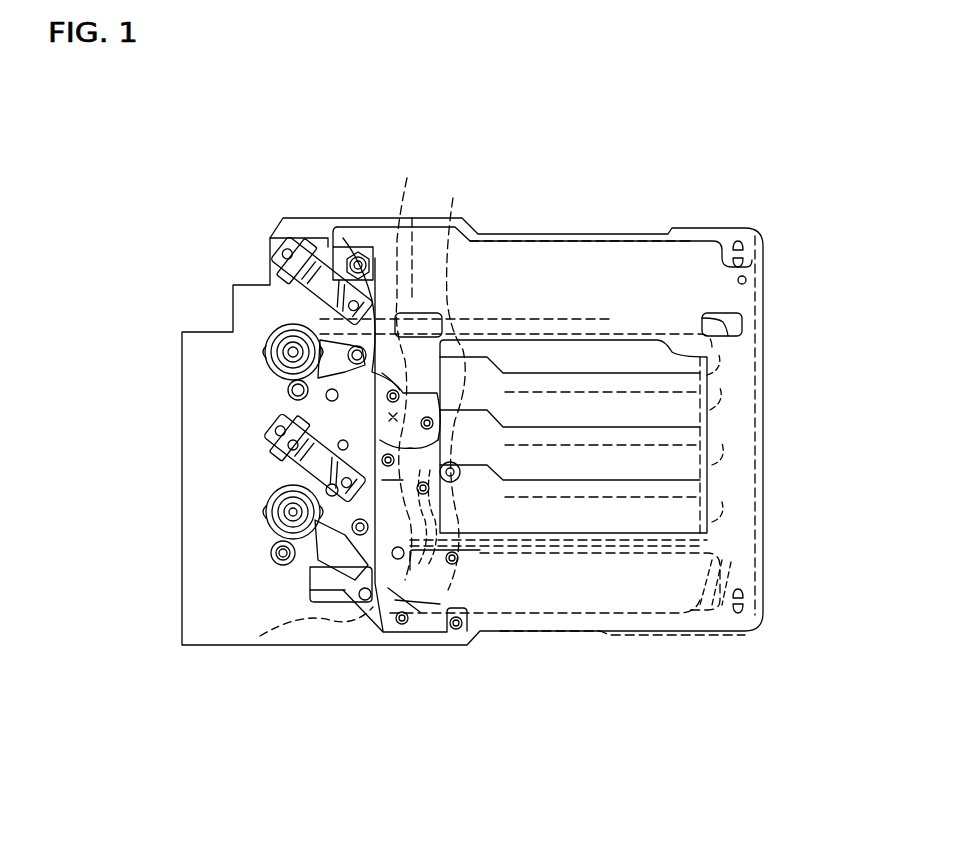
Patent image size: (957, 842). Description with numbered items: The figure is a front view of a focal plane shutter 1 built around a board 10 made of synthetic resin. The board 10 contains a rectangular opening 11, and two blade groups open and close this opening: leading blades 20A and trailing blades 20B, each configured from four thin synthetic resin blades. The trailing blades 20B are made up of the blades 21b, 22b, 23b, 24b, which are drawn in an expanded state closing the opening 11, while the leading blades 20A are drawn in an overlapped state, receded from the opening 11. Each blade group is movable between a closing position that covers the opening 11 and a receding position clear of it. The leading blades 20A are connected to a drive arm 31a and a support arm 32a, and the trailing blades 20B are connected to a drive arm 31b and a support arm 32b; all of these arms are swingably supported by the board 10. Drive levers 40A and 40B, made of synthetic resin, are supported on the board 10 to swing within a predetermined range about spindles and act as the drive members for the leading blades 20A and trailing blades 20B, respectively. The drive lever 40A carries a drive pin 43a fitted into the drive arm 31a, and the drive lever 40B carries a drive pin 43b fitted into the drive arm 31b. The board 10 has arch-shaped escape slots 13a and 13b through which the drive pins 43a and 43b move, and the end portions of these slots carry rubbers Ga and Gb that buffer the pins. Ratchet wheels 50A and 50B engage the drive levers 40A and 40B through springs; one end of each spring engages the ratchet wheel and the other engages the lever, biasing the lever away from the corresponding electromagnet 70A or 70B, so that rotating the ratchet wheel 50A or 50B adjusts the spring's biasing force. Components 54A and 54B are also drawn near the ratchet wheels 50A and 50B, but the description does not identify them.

The focal plane shutter 1 is at (751, 155).
The board 10 is at (758, 620).
The opening 11 is at (731, 341).
The escape slot 13a is at (330, 617).
The escape slot 13b is at (280, 302).
The leading blades 20A is at (787, 727).
The trailing blades 20B is at (836, 366).
The blade 21b is at (760, 522).
The blade 22b is at (760, 465).
The blade 23b is at (762, 410).
The blade 24b is at (753, 371).
The drive arm 31a is at (377, 633).
The drive arm 31b is at (391, 391).
The support arm 32a is at (367, 605).
The support arm 32b is at (465, 379).
The drive lever 40A is at (300, 565).
The drive lever 40B is at (262, 394).
The drive pin 43a is at (307, 583).
The drive pin 43b is at (353, 305).
The ratchet wheel 50A is at (251, 516).
The ratchet wheel 50B is at (255, 349).
The first motor pinion 54A is at (267, 525).
The second motor pinion 54B is at (282, 376).
The electromagnet 70A is at (252, 436).
The electromagnet 70B is at (277, 283).
The rubber Ga is at (307, 613).
The rubber Gb is at (365, 355).